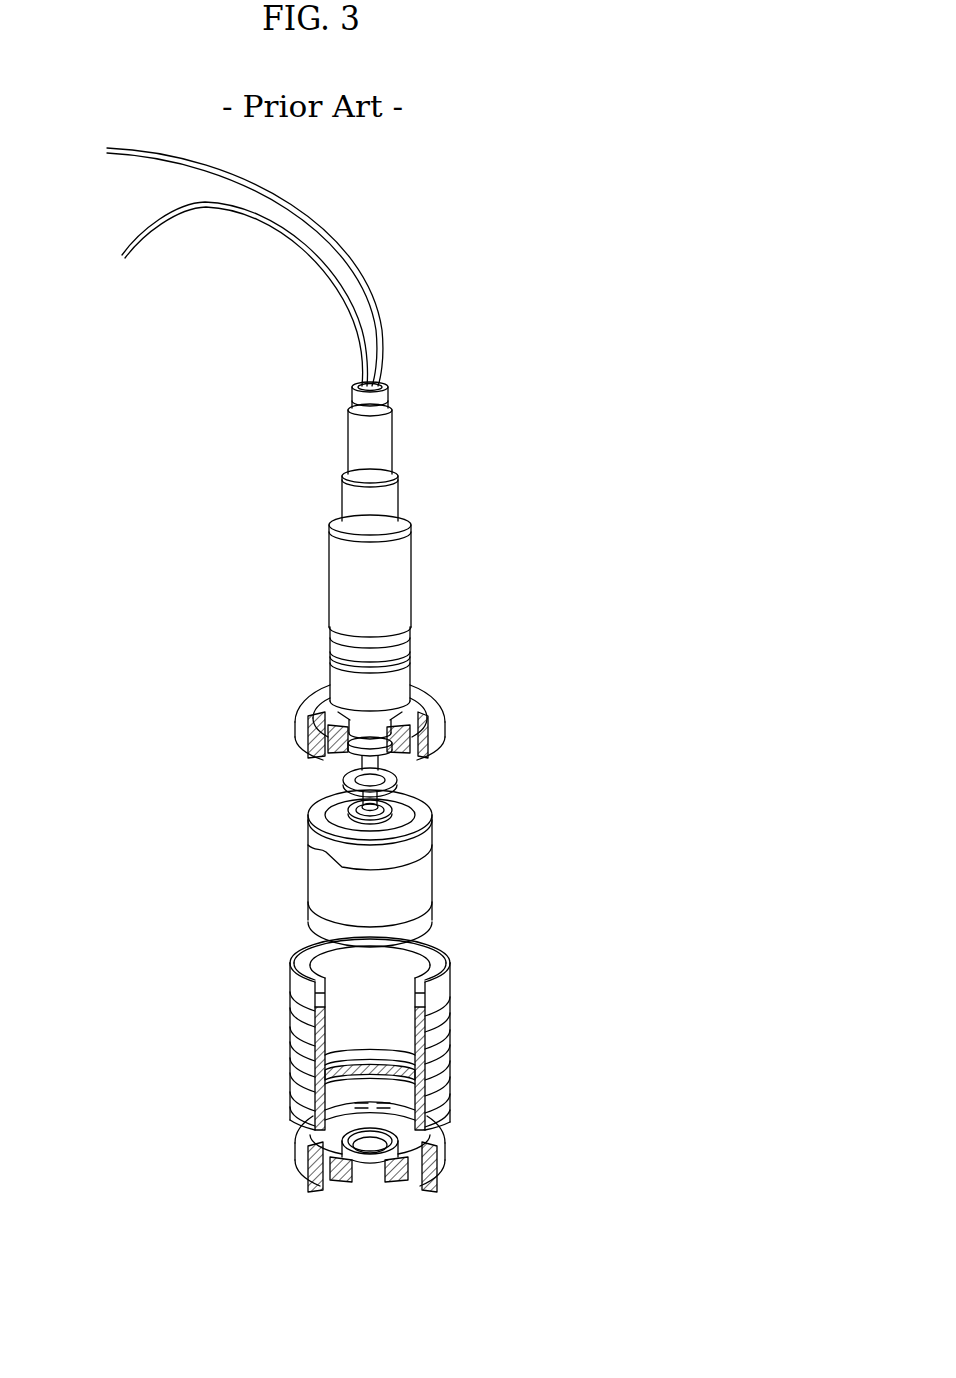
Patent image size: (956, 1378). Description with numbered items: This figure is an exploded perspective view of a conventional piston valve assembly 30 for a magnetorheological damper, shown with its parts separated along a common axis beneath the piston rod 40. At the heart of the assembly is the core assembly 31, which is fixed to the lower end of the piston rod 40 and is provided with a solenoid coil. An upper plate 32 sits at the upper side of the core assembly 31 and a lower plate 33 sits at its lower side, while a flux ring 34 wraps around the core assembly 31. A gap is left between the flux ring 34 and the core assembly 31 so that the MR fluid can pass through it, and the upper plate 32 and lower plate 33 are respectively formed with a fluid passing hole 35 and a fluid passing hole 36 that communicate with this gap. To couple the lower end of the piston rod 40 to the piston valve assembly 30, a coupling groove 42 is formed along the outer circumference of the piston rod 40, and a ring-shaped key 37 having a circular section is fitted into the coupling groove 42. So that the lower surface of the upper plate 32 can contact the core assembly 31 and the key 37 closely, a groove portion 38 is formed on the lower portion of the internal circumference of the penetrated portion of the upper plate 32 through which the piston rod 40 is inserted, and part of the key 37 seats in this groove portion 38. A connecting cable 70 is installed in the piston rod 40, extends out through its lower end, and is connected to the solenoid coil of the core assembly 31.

The piston valve assembly 30 is at (163, 838).
The core assembly 31 is at (417, 877).
The upper plate 32 is at (296, 724).
The lower plate 33 is at (298, 1170).
The flux ring 34 is at (290, 1010).
The fluid passing hole 35 is at (307, 690).
The fluid passing hole 36 is at (338, 1178).
The ring-shaped key 37 is at (412, 798).
The groove portion 38 is at (432, 700).
The piston rod 40 is at (412, 565).
The coupling groove 42 is at (330, 760).
The connecting cable 70 is at (402, 783).